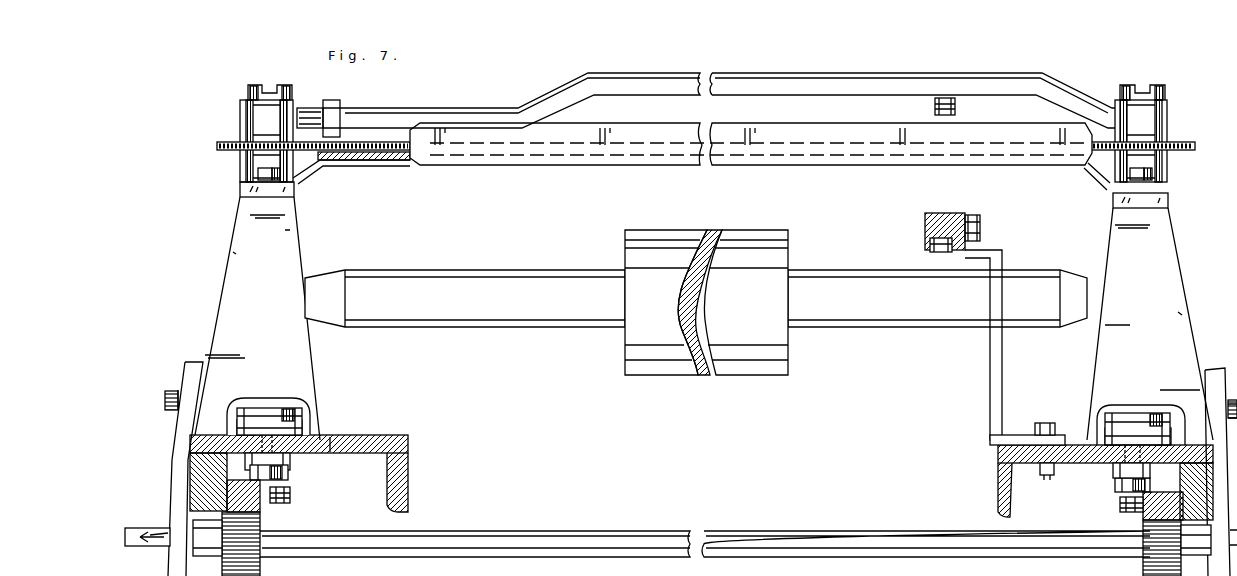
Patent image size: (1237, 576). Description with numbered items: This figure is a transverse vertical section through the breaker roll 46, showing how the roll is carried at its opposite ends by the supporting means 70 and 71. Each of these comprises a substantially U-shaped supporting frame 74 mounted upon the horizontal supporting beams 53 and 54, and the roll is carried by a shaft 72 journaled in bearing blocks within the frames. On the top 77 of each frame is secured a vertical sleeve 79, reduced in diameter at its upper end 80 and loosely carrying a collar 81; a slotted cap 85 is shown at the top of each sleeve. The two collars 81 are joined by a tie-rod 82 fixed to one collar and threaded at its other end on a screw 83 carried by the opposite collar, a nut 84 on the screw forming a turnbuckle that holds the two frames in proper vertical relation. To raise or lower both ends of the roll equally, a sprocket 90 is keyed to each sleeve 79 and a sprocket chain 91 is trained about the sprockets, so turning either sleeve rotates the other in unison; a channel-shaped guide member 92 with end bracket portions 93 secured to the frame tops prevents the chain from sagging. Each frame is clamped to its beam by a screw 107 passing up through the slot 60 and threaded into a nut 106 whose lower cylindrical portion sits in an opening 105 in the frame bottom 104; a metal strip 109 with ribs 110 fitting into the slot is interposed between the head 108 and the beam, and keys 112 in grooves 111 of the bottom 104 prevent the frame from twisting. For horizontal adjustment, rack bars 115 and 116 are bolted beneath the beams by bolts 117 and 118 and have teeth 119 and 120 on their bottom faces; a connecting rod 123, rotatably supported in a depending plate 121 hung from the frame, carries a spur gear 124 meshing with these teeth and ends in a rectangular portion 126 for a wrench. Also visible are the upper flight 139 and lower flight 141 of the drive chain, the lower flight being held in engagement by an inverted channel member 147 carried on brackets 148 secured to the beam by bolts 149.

The breaker roll 46 is at (628, 376).
The horizontal supporting beam 53 is at (370, 440).
The horizontal supporting beam 54 is at (997, 453).
The slot 60 is at (333, 436).
The supporting means 70 is at (302, 233).
The supporting means 71 is at (1183, 238).
The shaft 72 is at (513, 330).
The supporting frame 74 is at (236, 253).
The top of the supporting frame 77 is at (242, 188).
The sleeve 79 is at (243, 164).
The reduced upper end 80 is at (250, 96).
The collar 81 is at (246, 118).
The tie-rod 82 is at (785, 72).
The screw 83 is at (313, 107).
The nut 84 is at (337, 100).
The housing cap 85 is at (270, 88).
The sprocket 90 is at (218, 143).
The sprocket chain 91 is at (365, 163).
The channel-shaped guide member 92 is at (553, 170).
The bracket portion 93 is at (305, 180).
The bottom of the supporting frame 104 is at (228, 420).
The opening 105 is at (1090, 438).
The nut 106 is at (275, 408).
The screw 107 is at (1112, 470).
The head of screw 108 is at (286, 474).
The metal strip 109 is at (1178, 478).
The rib 110 is at (292, 462).
The groove 111 is at (264, 410).
The key 112 is at (214, 436).
The rack bar 115 is at (268, 510).
The rack bar 116 is at (1145, 515).
The bolt 117 is at (288, 492).
The bolt 118 is at (1121, 505).
The teeth 119 is at (207, 538).
The teeth 120 is at (1143, 542).
The depending plate 121 is at (174, 450).
The connecting rod 123 is at (612, 532).
The spur gear 124 is at (262, 558).
The rectangular portion 126 is at (132, 528).
The upper flight 139 is at (936, 106).
The lower flight 141 is at (936, 252).
The inverted channel member 147 is at (950, 213).
The bracket 148 is at (988, 352).
The bolt 149 is at (1040, 424).